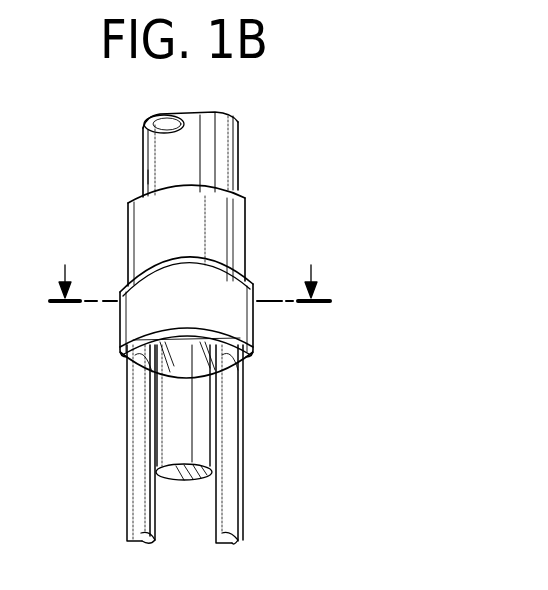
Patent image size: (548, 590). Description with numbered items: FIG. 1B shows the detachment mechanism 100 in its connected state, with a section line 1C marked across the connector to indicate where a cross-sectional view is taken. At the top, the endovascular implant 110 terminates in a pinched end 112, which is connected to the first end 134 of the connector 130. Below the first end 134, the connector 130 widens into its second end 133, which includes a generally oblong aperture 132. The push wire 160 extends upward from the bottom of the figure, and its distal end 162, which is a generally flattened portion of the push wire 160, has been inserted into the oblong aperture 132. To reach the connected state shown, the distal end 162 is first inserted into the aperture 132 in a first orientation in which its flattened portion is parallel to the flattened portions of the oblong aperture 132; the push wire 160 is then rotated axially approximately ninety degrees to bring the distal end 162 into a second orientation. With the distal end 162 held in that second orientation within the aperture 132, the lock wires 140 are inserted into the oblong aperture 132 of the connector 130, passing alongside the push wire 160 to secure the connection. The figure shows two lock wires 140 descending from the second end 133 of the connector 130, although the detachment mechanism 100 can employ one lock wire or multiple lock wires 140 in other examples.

The detachment mechanism 100 is at (258, 337).
The endovascular implant 110 is at (213, 147).
The pinched end 112 is at (170, 179).
The connector 130 is at (122, 330).
The aperture 132 is at (181, 372).
The second end 133 is at (233, 372).
The first end 134 is at (230, 233).
The lock wires 140 is at (132, 517).
The push wire 160 is at (198, 453).
The distal end 162 is at (172, 346).
The section line 1C is at (189, 267).